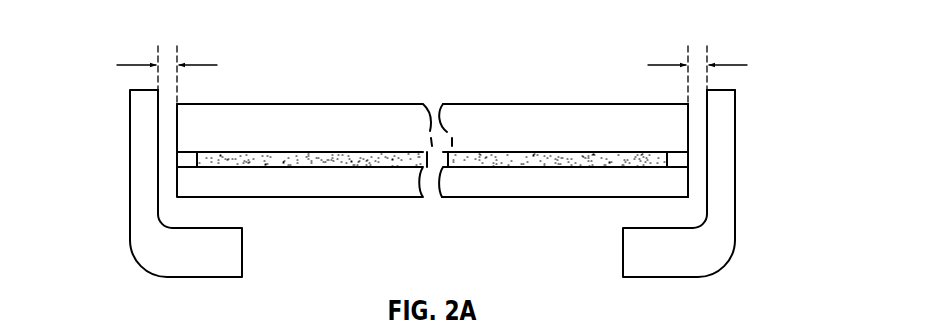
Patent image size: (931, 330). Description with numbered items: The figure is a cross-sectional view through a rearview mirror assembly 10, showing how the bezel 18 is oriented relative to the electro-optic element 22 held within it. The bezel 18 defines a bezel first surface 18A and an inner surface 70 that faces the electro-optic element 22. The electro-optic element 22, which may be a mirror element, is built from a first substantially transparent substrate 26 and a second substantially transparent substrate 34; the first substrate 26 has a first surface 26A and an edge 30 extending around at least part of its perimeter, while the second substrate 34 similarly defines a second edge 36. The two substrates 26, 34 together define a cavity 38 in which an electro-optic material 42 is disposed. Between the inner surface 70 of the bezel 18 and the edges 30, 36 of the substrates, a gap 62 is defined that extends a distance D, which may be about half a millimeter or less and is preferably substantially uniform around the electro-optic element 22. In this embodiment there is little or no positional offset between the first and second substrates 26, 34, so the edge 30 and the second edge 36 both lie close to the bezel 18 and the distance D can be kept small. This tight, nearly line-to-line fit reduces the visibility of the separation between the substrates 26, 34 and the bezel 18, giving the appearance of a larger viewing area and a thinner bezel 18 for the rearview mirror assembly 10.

The rearview mirror assembly 10 is at (113, 47).
The bezel 18 is at (130, 143).
The bezel first surface 18A is at (727, 89).
The electro-optic element 22 is at (558, 87).
The first substantially transparent substrate 26 is at (255, 127).
The first surface 26A is at (458, 103).
The edge 30 is at (177, 120).
The second substantially transparent substrate 34 is at (372, 183).
The second edge 36 is at (690, 191).
The cavity 38 is at (485, 149).
The electro-optic material 42 is at (311, 158).
The gap 62 is at (166, 153).
The inner surface 70 is at (158, 133).
The distance D is at (432, 71).